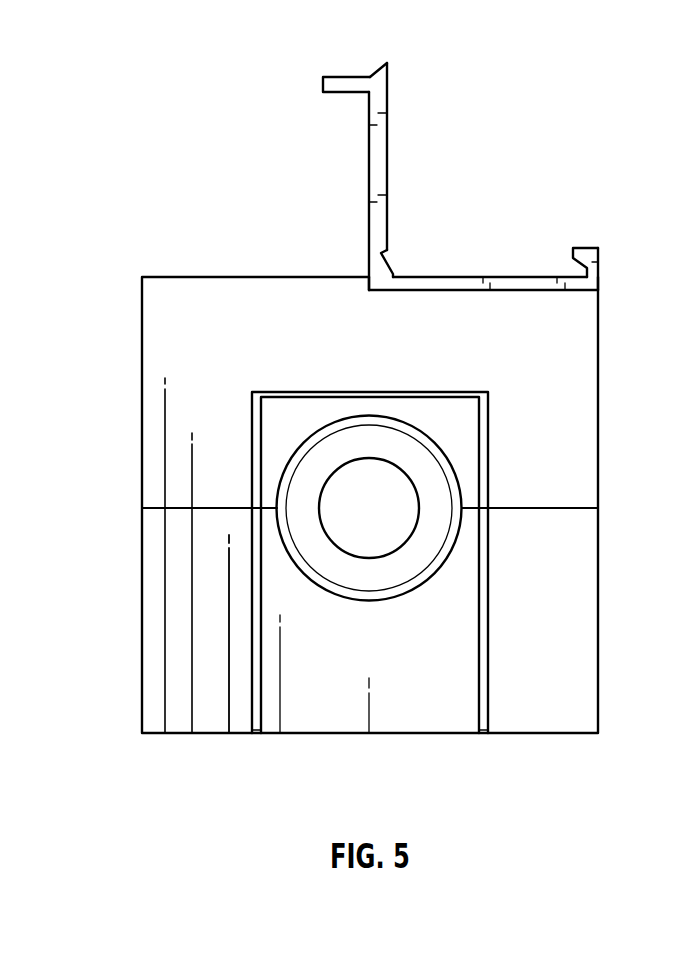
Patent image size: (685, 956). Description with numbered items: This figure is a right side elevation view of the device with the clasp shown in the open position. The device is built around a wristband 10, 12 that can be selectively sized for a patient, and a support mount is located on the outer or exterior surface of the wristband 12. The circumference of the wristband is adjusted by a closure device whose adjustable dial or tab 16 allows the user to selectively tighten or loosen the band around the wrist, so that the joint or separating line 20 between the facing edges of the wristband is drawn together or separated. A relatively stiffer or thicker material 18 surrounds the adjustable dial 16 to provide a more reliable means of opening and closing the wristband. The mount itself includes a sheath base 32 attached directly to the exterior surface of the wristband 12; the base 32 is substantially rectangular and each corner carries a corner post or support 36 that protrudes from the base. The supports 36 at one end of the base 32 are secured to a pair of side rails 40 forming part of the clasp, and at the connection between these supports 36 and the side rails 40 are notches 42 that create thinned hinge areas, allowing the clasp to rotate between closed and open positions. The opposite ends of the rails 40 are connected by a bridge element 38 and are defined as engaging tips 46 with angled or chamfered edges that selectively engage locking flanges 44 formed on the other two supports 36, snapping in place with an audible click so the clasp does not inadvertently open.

The wristband 10 is at (172, 103).
The wristband 12 is at (545, 368).
The adjustable dial 16 is at (350, 537).
The stiffer or thicker material 18 is at (307, 433).
The joint or separating line 20 is at (207, 507).
The sheath base 32 is at (461, 281).
The corner post or support 36 is at (377, 268).
The bridge element 38 is at (325, 84).
The side rails 40 is at (376, 186).
The notches 42 is at (383, 252).
The locking flanges 44 is at (587, 261).
The engaging tips 46 is at (387, 66).